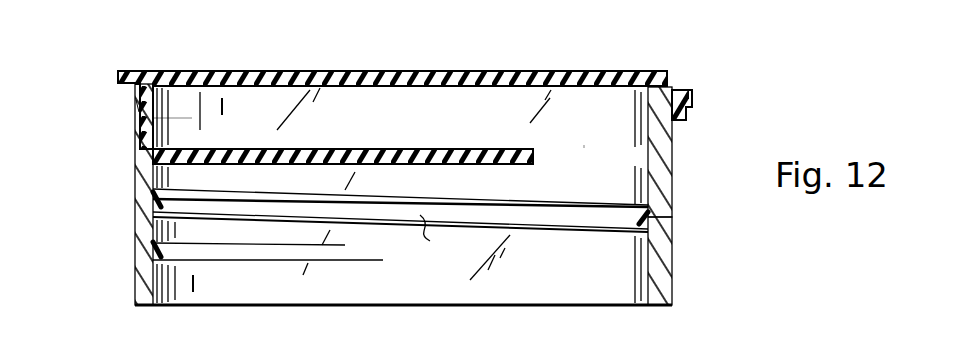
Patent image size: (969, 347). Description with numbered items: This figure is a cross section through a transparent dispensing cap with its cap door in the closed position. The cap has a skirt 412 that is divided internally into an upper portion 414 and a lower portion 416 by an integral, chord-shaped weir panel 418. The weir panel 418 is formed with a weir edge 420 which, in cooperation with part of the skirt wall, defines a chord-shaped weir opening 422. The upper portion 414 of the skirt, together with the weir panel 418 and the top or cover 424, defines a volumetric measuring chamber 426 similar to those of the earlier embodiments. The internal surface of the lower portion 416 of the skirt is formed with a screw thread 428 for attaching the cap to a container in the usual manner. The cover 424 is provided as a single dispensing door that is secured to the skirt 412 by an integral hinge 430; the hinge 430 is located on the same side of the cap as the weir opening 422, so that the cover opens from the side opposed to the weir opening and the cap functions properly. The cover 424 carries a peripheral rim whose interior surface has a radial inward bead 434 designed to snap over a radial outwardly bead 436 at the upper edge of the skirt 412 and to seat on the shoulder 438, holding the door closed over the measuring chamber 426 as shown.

The skirt 412 is at (128, 239).
The upper portion of the skirt 414 is at (670, 160).
The lower portion of the skirt 416 is at (672, 270).
The weir panel 418 is at (341, 149).
The weir edge 420 is at (535, 158).
The weir opening 422 is at (584, 148).
The top or cover 424 is at (334, 68).
The volumetric measuring chamber 426 is at (184, 119).
The screw thread 428 is at (400, 232).
The integral hinge 430 is at (694, 94).
The radial inward bead 434 is at (137, 100).
The radial outwardly bead 436 is at (147, 80).
The shoulder 438 is at (138, 107).